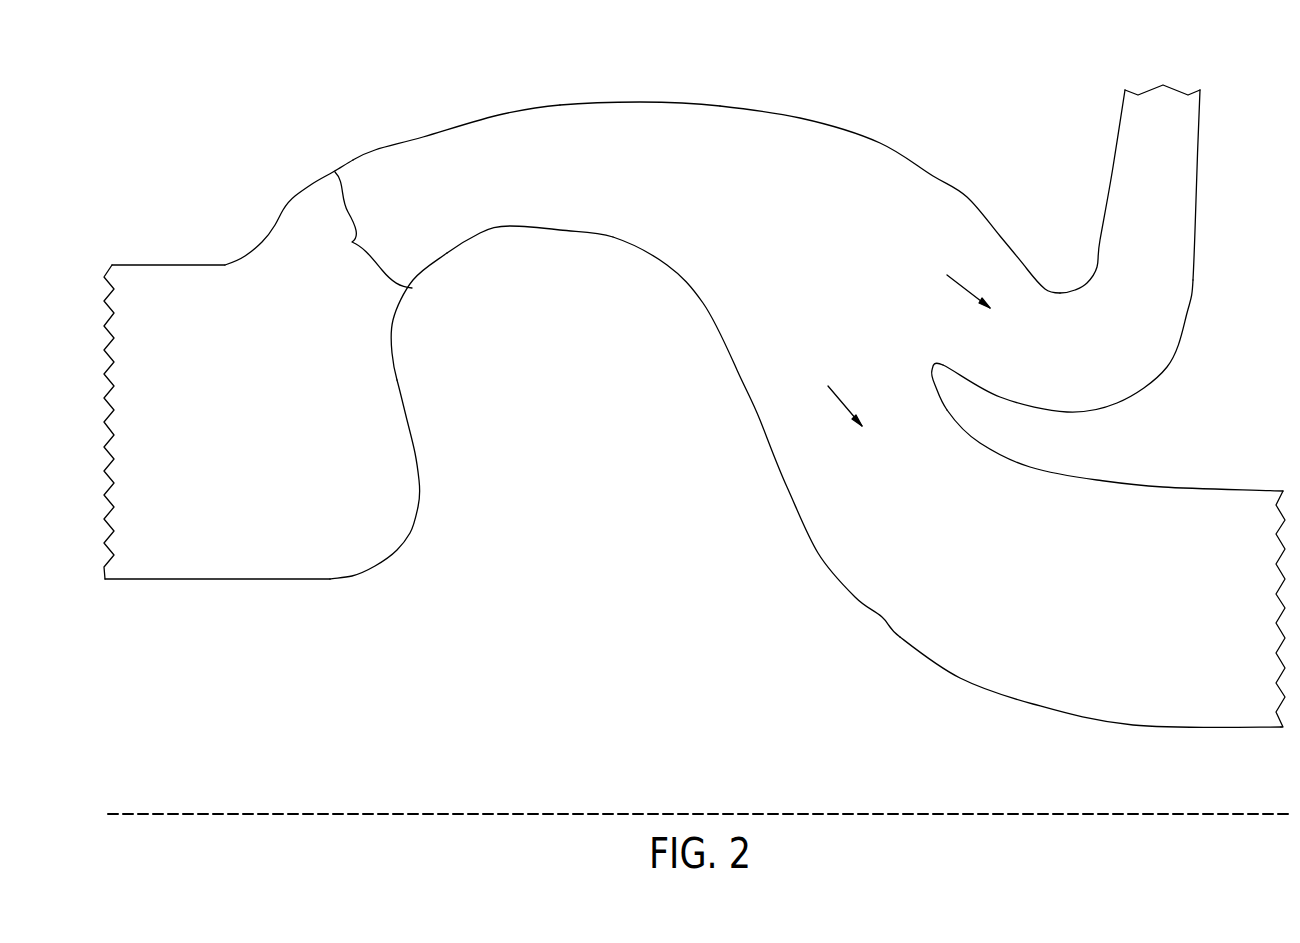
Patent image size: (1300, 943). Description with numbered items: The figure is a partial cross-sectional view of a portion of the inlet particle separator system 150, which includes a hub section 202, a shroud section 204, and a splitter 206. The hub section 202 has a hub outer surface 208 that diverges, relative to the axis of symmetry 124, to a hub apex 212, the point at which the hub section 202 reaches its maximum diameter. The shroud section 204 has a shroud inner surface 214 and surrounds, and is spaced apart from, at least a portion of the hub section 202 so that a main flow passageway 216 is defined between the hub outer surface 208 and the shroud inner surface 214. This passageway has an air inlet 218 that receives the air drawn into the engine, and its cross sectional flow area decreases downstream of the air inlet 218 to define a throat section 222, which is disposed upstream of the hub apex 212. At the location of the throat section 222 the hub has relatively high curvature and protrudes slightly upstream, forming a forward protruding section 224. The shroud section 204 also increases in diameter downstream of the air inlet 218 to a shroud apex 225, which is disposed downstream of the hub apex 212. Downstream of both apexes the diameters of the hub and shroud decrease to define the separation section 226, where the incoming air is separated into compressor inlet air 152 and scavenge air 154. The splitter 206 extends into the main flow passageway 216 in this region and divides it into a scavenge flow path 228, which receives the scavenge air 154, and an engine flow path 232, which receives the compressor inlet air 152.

The inlet particle separator system 150 is at (998, 68).
The shroud section 204 is at (728, 90).
The shroud apex 225 is at (597, 102).
The shroud inner surface 214 is at (438, 138).
The main flow passageway 216 is at (635, 158).
The hub apex 212 is at (514, 226).
The hub outer surface 208 is at (620, 244).
The throat section 222 is at (357, 230).
The forward protruding section 224 is at (452, 268).
The air inlet 218 is at (315, 322).
The hub section 202 is at (531, 538).
The separation section 226 is at (860, 278).
The scavenge air 154 is at (963, 288).
The splitter 206 is at (932, 372).
The scavenge flow path 228 is at (1104, 363).
The compressor inlet air 152 is at (840, 400).
The engine flow path 232 is at (982, 558).
The axis of symmetry 124 is at (143, 812).